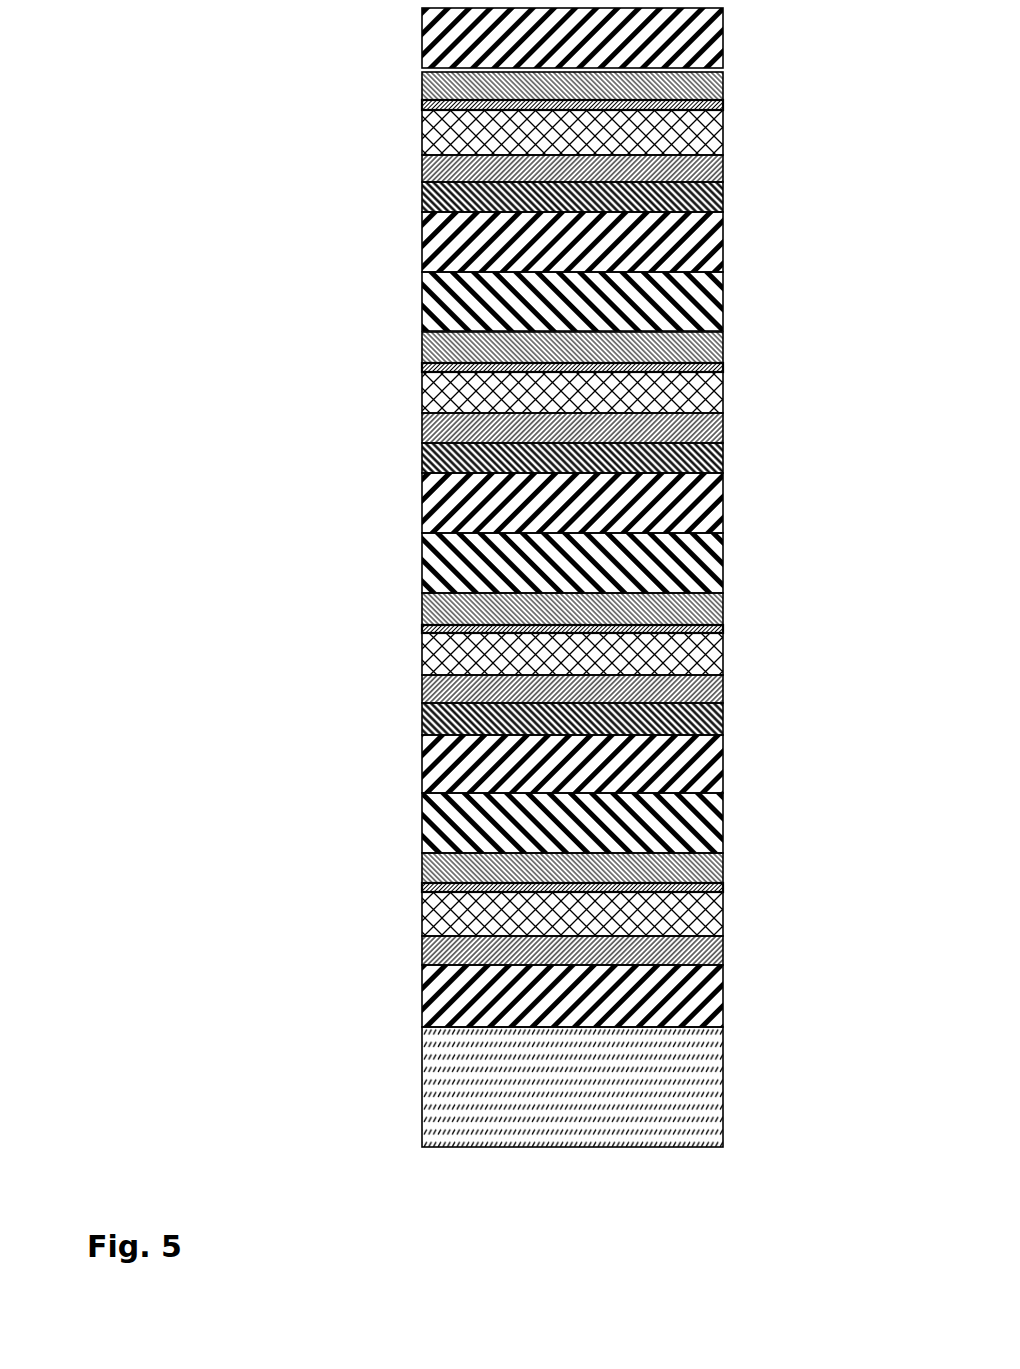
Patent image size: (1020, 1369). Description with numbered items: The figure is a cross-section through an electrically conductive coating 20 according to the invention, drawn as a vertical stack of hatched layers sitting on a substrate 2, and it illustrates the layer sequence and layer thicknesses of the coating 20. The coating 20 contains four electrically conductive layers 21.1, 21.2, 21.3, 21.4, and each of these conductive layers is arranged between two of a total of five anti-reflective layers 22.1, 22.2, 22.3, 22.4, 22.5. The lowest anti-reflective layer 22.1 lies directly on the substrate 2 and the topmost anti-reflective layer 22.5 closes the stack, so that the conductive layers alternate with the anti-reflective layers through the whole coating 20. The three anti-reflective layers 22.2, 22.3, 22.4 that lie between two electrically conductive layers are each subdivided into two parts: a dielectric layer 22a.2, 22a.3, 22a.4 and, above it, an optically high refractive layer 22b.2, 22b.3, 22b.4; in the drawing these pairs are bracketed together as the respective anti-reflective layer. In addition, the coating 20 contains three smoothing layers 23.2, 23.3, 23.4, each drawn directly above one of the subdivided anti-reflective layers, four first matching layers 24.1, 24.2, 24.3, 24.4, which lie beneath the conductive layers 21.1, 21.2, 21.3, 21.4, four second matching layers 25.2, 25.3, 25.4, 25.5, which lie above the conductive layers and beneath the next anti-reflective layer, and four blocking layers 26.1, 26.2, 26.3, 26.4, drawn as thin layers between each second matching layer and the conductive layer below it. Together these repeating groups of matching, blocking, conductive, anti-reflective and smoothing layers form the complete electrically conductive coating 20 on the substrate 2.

The substrate 2 is at (690, 1088).
The electrically conductive coating 20 is at (392, 10).
The electrically conductive layer 21.1 is at (663, 917).
The electrically conductive layer 21.2 is at (663, 656).
The electrically conductive layer 21.3 is at (663, 393).
The electrically conductive layer 21.4 is at (663, 132).
The anti-reflective layer 22.1 is at (455, 998).
The anti-reflective layer 22.2 is at (578, 794).
The anti-reflective layer 22.3 is at (578, 533).
The anti-reflective layer 22.4 is at (578, 271).
The anti-reflective layer 22.5 is at (455, 40).
The dielectric layer 22a.2 is at (663, 826).
The dielectric layer 22a.3 is at (663, 565).
The dielectric layer 22a.4 is at (663, 300).
The optically high refractive layer 22b.2 is at (663, 765).
The optically high refractive layer 22b.3 is at (663, 505).
The optically high refractive layer 22b.4 is at (663, 242).
The smoothing layer 23.2 is at (663, 720).
The smoothing layer 23.3 is at (663, 460).
The smoothing layer 23.4 is at (663, 197).
The first matching layer 24.1 is at (663, 950).
The first matching layer 24.2 is at (663, 688).
The first matching layer 24.3 is at (663, 428).
The first matching layer 24.4 is at (663, 165).
The second matching layer 25.2 is at (663, 868).
The second matching layer 25.3 is at (663, 607).
The second matching layer 25.4 is at (663, 345).
The second matching layer 25.5 is at (663, 84).
The blocking layer 26.1 is at (422, 887).
The blocking layer 26.2 is at (422, 627).
The blocking layer 26.3 is at (422, 365).
The blocking layer 26.4 is at (422, 107).